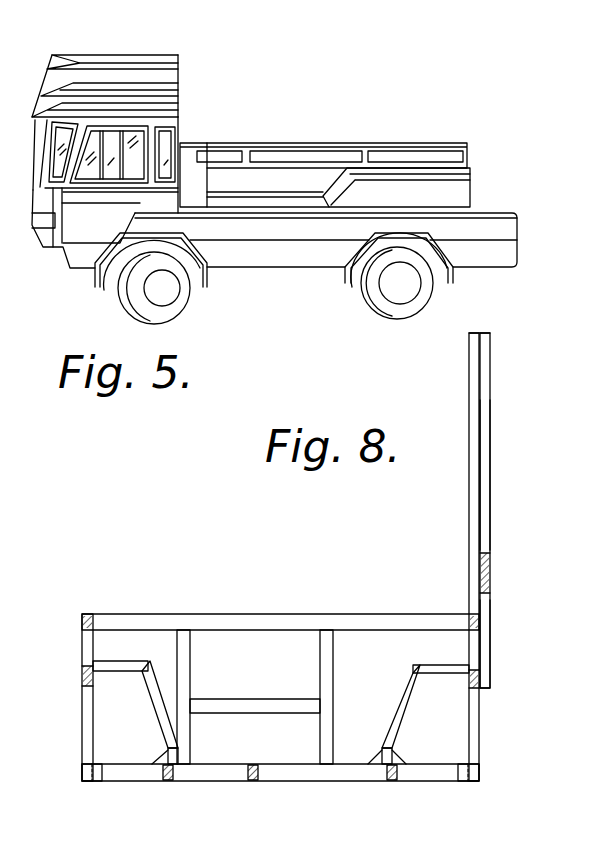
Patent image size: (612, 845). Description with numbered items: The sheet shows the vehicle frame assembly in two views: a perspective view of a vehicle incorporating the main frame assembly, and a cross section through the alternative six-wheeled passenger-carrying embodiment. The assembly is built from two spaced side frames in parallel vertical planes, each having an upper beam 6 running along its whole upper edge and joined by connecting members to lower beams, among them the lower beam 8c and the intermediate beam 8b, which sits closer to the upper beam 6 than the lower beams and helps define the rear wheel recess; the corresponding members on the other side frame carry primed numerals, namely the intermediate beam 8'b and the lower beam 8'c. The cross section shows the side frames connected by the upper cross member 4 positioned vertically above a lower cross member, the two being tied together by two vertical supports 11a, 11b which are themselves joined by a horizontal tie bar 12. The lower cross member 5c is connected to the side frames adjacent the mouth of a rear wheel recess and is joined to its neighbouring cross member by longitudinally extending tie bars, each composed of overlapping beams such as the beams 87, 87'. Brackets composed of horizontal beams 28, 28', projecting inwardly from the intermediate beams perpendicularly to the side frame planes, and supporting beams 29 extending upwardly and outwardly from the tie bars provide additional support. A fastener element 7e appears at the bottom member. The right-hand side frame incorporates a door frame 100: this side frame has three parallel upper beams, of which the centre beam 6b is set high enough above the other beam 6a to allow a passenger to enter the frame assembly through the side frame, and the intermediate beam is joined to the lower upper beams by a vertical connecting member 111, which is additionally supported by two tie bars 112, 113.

The upper cross member 4 is at (247, 628).
The cross member 5c is at (302, 782).
The upper beam 6 is at (88, 613).
The upper beam 6a is at (485, 625).
The centre upper beam 6b is at (478, 340).
The intermediate beam 8b is at (83, 680).
The lower beam 8c is at (90, 782).
The intermediate beam 8'b is at (506, 697).
The lower beam 8'c is at (459, 797).
The horizontal beam 28 is at (126, 626).
The horizontal beam 28' is at (412, 661).
The supporting beam 29 is at (160, 712).
The overlapping beam 87 is at (173, 795).
The overlapping beam 87' is at (400, 797).
The vertical support 11a is at (322, 674).
The vertical support 11b is at (193, 660).
The horizontal tie bar 12 is at (253, 702).
The bottom member fastener 7e is at (252, 782).
The door frame 100 is at (466, 402).
The vertical connecting member 111 is at (474, 490).
The tie bar 112 is at (490, 556).
The tie bar 113 is at (488, 660).